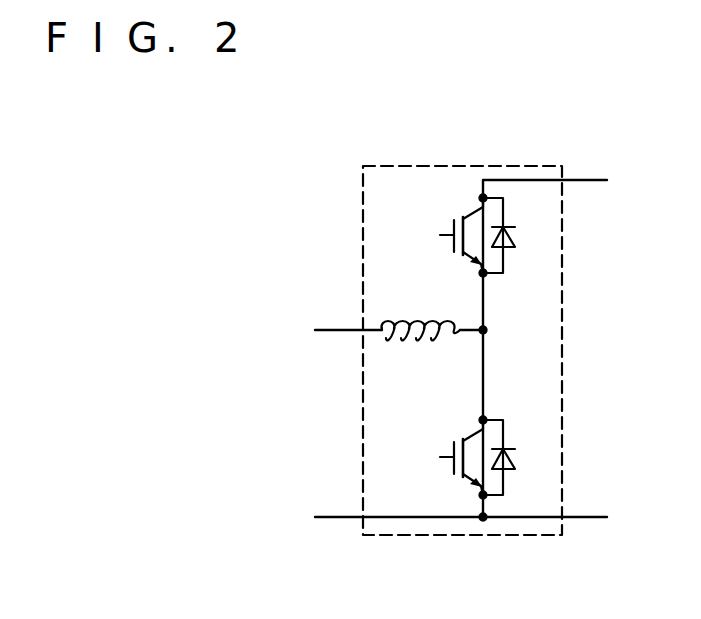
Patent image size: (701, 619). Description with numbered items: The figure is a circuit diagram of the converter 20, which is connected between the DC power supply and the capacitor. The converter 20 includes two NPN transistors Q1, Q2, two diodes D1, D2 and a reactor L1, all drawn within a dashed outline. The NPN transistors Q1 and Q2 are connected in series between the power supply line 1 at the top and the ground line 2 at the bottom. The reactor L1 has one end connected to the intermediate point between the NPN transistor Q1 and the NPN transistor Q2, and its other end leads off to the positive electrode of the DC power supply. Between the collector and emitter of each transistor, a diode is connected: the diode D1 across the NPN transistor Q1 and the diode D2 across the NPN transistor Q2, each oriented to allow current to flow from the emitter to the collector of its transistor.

The converter 20 is at (458, 166).
The power supply line 1 is at (592, 179).
The ground line 2 is at (590, 522).
The reactor L1 is at (399, 313).
The NPN transistor Q1 is at (451, 235).
The diode D1 is at (509, 240).
The NPN transistor Q2 is at (451, 457).
The diode D2 is at (510, 463).